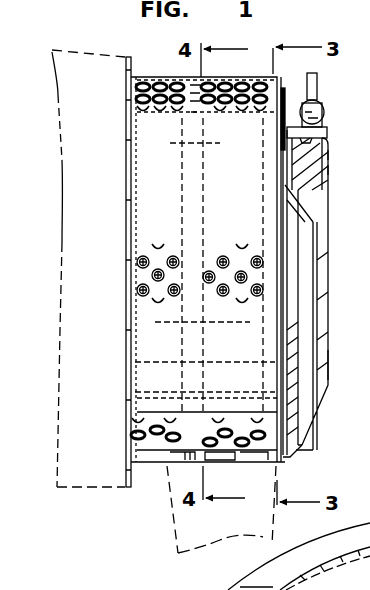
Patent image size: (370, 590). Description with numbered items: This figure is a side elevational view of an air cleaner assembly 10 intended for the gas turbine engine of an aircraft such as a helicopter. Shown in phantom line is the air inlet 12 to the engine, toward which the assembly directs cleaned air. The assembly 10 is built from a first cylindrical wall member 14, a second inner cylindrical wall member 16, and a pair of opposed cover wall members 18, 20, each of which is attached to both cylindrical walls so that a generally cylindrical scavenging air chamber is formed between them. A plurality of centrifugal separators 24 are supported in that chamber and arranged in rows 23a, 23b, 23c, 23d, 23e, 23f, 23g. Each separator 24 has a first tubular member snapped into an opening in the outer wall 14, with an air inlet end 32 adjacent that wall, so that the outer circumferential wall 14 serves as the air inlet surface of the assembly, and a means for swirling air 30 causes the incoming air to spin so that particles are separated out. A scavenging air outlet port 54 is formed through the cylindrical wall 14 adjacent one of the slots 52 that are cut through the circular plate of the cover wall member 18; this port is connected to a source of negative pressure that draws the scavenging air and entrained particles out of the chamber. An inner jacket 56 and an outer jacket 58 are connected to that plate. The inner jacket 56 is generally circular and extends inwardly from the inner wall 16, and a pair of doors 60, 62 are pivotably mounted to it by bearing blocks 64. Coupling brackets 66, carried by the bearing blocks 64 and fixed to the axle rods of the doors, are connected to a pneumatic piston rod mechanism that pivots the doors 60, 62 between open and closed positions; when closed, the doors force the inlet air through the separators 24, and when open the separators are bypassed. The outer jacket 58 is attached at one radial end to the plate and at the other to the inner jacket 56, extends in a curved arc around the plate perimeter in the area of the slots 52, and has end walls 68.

The air cleaner assembly 10 is at (117, 520).
The air inlet 12 is at (67, 107).
The first cylindrical wall member 14 is at (150, 182).
The second inner cylindrical wall member 16 is at (349, 365).
The cover wall member 18 is at (330, 385).
The cover wall member 20 is at (125, 404).
The row of centrifugal separators 23a is at (128, 108).
The row of centrifugal separators 23b is at (163, 110).
The row of centrifugal separators 23c is at (176, 83).
The row of centrifugal separators 23d is at (208, 112).
The row of centrifugal separators 23e is at (228, 82).
The row of centrifugal separators 23f is at (242, 84).
The row of centrifugal separators 23g is at (276, 88).
The centrifugal separators 24 is at (138, 266).
The means for swirling air 30 is at (242, 246).
The air inlet end 32 is at (154, 251).
The slots 52 is at (349, 147).
The scavenging air outlet port 54 is at (257, 467).
The inner jacket 56 is at (326, 214).
The outer jacket 58 is at (303, 268).
The door 60 is at (349, 167).
The door 62 is at (323, 113).
The bearing blocks 64 is at (300, 163).
The coupling brackets 66 is at (312, 136).
The end walls 68 is at (346, 169).